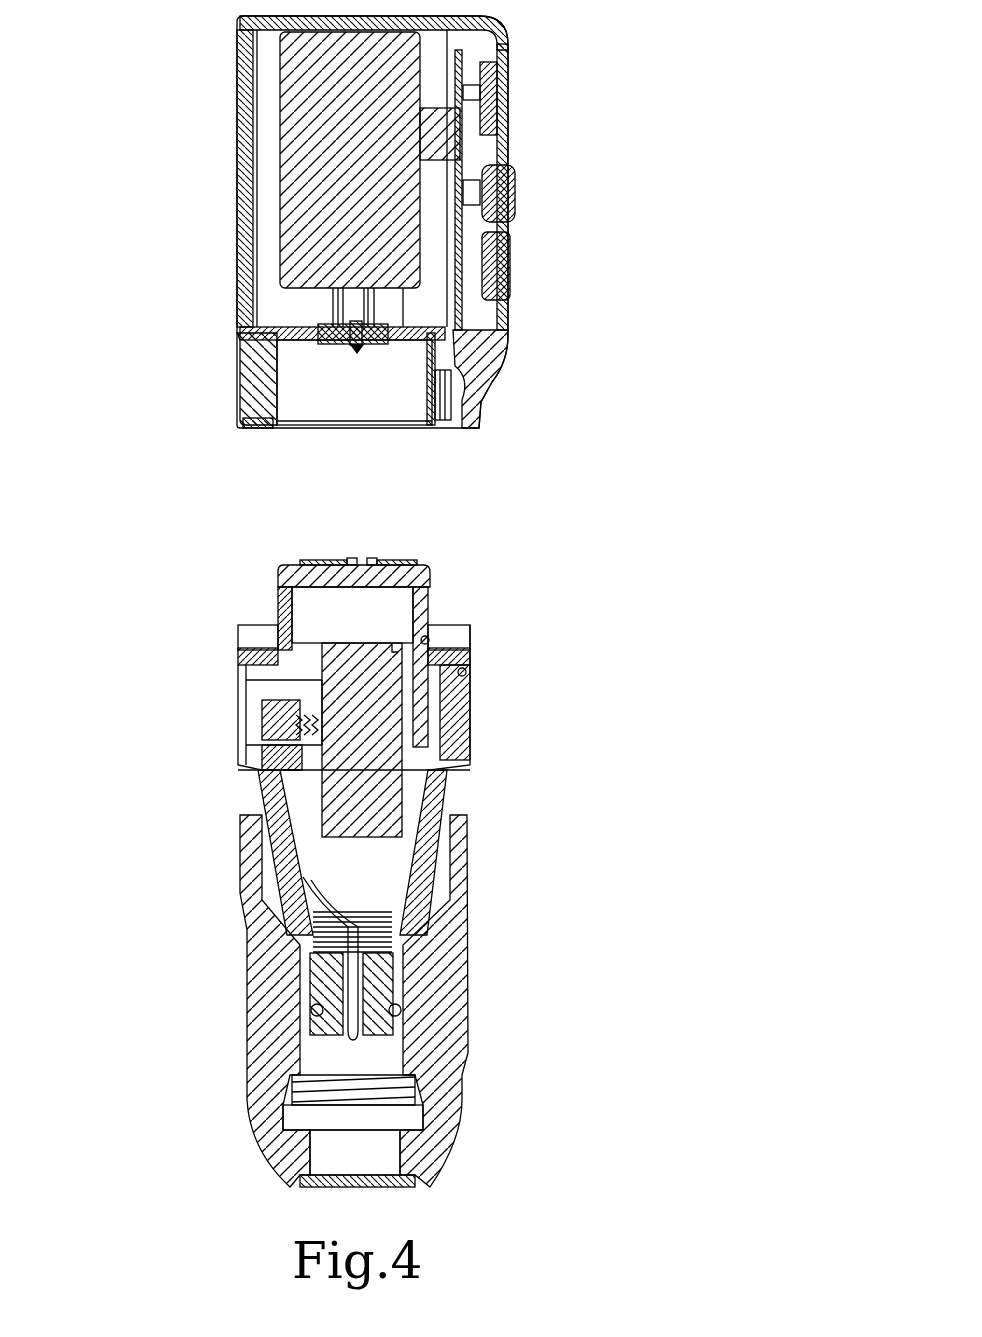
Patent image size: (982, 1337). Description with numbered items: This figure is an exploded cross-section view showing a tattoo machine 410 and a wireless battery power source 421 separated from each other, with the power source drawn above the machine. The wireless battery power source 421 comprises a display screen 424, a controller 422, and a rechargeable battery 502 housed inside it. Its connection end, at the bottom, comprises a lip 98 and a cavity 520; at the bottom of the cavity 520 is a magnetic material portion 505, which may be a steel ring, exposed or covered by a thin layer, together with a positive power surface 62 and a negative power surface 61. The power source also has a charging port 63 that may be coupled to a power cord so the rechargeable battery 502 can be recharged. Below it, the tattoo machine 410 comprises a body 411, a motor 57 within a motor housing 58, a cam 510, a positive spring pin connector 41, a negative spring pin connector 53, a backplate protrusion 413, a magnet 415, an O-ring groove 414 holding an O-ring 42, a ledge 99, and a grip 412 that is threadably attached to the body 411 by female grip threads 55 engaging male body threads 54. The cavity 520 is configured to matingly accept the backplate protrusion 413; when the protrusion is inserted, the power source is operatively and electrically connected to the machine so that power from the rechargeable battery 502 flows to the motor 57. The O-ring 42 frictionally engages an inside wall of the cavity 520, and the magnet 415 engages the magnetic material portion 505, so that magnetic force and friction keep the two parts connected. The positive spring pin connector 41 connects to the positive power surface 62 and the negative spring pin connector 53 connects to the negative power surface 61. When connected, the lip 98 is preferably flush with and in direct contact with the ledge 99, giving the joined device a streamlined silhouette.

The wireless battery power source 421 is at (570, 167).
The display screen 424 is at (508, 90).
The controller 422 is at (513, 208).
The rechargeable battery 502 is at (300, 116).
The negative power surface 61 is at (345, 328).
The positive power surface 62 is at (352, 338).
The lip 98 is at (247, 425).
The cavity 520 is at (362, 404).
The charging port 63 is at (443, 410).
The magnetic material portion 505 is at (458, 362).
The tattoo machine 410 is at (520, 899).
The O-ring 42 is at (277, 587).
The positive spring pin connector 41 is at (352, 561).
The negative spring pin connector 53 is at (373, 562).
The magnet 415 is at (305, 562).
The backplate protrusion 413 is at (430, 613).
The O-ring groove 414 is at (272, 590).
The motor 57 is at (400, 712).
The ledge 99 is at (262, 630).
The body 411 is at (200, 714).
The cam 510 is at (300, 763).
The motor housing 58 is at (447, 802).
The grip 412 is at (210, 960).
The female grip threads 55 is at (418, 1040).
The male body threads 54 is at (413, 1090).